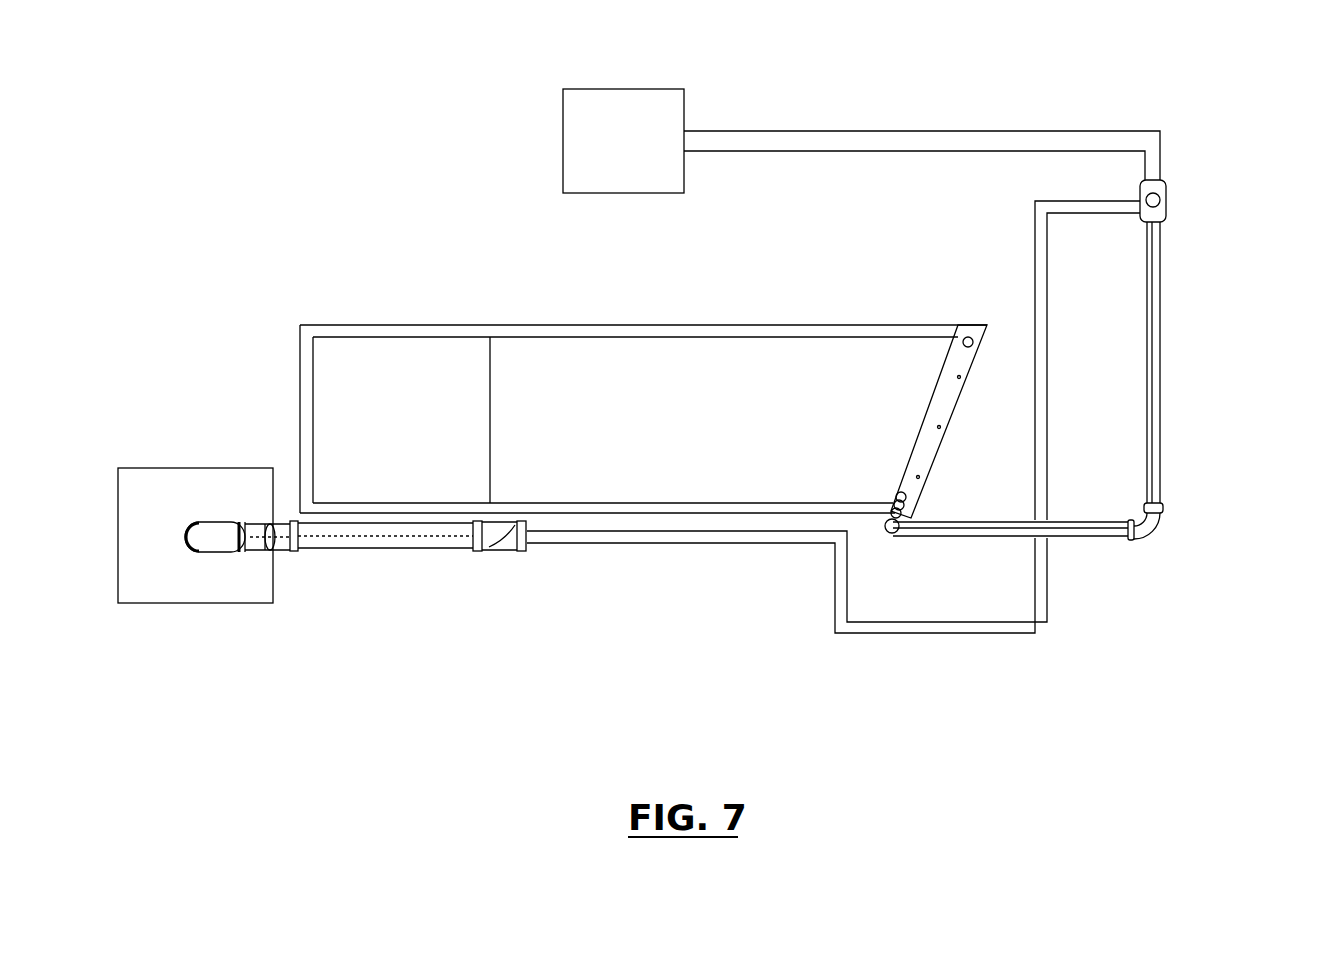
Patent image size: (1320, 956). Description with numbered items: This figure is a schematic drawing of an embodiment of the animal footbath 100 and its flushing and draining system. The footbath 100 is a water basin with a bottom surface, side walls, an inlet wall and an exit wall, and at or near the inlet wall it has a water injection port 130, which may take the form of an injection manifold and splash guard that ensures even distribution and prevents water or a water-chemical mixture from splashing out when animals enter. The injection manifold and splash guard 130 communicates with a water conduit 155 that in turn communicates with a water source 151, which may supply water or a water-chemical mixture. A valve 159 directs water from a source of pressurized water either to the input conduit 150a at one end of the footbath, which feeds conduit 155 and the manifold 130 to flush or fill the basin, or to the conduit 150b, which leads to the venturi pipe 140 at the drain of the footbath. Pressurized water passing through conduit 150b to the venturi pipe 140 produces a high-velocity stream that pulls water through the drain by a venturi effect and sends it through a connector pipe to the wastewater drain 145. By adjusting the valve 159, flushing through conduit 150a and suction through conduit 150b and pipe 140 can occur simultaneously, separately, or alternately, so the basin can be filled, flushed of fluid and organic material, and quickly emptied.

The footbath 100 is at (642, 344).
The water injection port 130 is at (950, 387).
The venturi pipe 140 is at (496, 544).
The wastewater drain 145 is at (333, 552).
The conduit 150a is at (1153, 347).
The conduit 150b is at (872, 622).
The water source 151 is at (604, 110).
The water conduit 155 is at (922, 529).
The valve 159 is at (1153, 196).